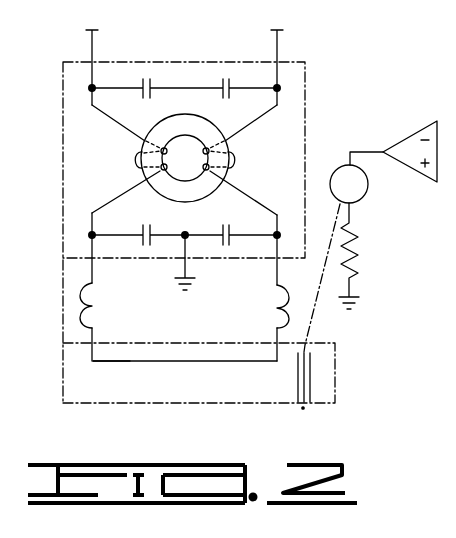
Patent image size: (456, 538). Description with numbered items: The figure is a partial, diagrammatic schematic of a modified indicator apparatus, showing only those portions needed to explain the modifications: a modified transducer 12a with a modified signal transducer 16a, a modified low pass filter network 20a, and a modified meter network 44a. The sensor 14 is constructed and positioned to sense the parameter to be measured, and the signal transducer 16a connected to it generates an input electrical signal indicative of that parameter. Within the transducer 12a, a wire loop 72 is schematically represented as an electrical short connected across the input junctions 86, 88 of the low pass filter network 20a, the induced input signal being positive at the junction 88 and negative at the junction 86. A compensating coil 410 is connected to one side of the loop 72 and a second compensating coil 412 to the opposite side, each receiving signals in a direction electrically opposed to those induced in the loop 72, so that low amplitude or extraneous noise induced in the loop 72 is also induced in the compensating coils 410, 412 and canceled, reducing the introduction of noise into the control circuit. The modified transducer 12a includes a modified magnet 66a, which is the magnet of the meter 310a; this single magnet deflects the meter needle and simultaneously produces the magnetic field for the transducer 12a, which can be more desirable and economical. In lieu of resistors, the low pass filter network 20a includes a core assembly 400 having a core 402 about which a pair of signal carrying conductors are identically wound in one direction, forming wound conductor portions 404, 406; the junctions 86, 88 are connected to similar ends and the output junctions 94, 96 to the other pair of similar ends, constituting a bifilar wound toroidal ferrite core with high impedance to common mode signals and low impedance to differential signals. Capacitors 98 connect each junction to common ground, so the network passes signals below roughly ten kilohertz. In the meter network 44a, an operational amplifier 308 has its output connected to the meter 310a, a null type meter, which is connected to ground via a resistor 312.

The modified low pass filter network 20a is at (306, 61).
The output junction 94 is at (92, 88).
The output junction 96 is at (278, 88).
The capacitors 98 is at (222, 82).
The core assembly 400 is at (185, 167).
The core 402 is at (209, 203).
The wound conductor portion 404 is at (137, 160).
The wound conductor portion 406 is at (236, 162).
The input junction 86 is at (92, 235).
The input junction 88 is at (280, 232).
The compensating coil 410 is at (100, 308).
The compensating coil 412 is at (275, 310).
The wire loop 72 is at (203, 362).
The sensor 14 is at (160, 362).
The modified signal transducer 16a is at (259, 388).
The modified magnet 66a is at (316, 378).
The modified transducer 12a is at (308, 407).
The modified meter network 44a is at (390, 134).
The operational amplifier 308 is at (405, 170).
The meter 310a is at (340, 168).
The resistor 312 is at (358, 240).